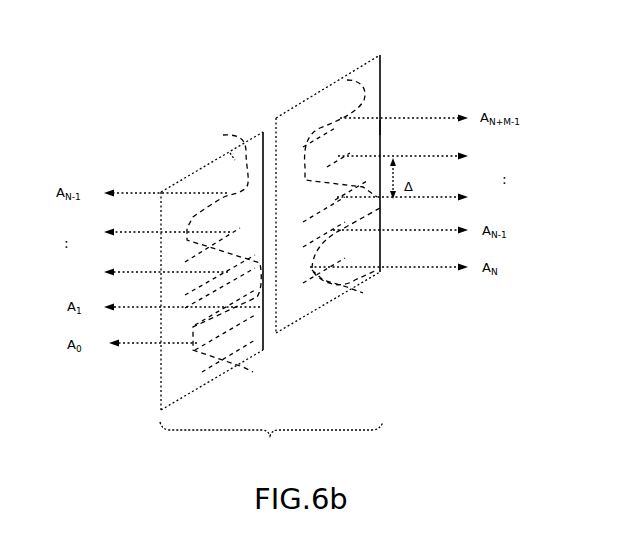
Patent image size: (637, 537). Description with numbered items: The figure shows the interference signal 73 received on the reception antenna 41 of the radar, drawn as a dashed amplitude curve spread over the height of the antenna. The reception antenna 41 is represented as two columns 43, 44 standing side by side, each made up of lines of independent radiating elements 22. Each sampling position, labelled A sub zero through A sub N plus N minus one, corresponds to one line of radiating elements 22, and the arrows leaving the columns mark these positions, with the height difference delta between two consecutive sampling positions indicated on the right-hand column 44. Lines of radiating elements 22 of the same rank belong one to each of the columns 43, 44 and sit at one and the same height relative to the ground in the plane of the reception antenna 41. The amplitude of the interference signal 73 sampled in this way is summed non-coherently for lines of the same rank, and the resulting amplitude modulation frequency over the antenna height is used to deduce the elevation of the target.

The interference signal 73 is at (223, 135).
The radiating elements 22 is at (382, 128).
The column of the reception antenna 43 is at (205, 386).
The column of the reception antenna 44 is at (330, 300).
The reception antenna 41 is at (271, 443).